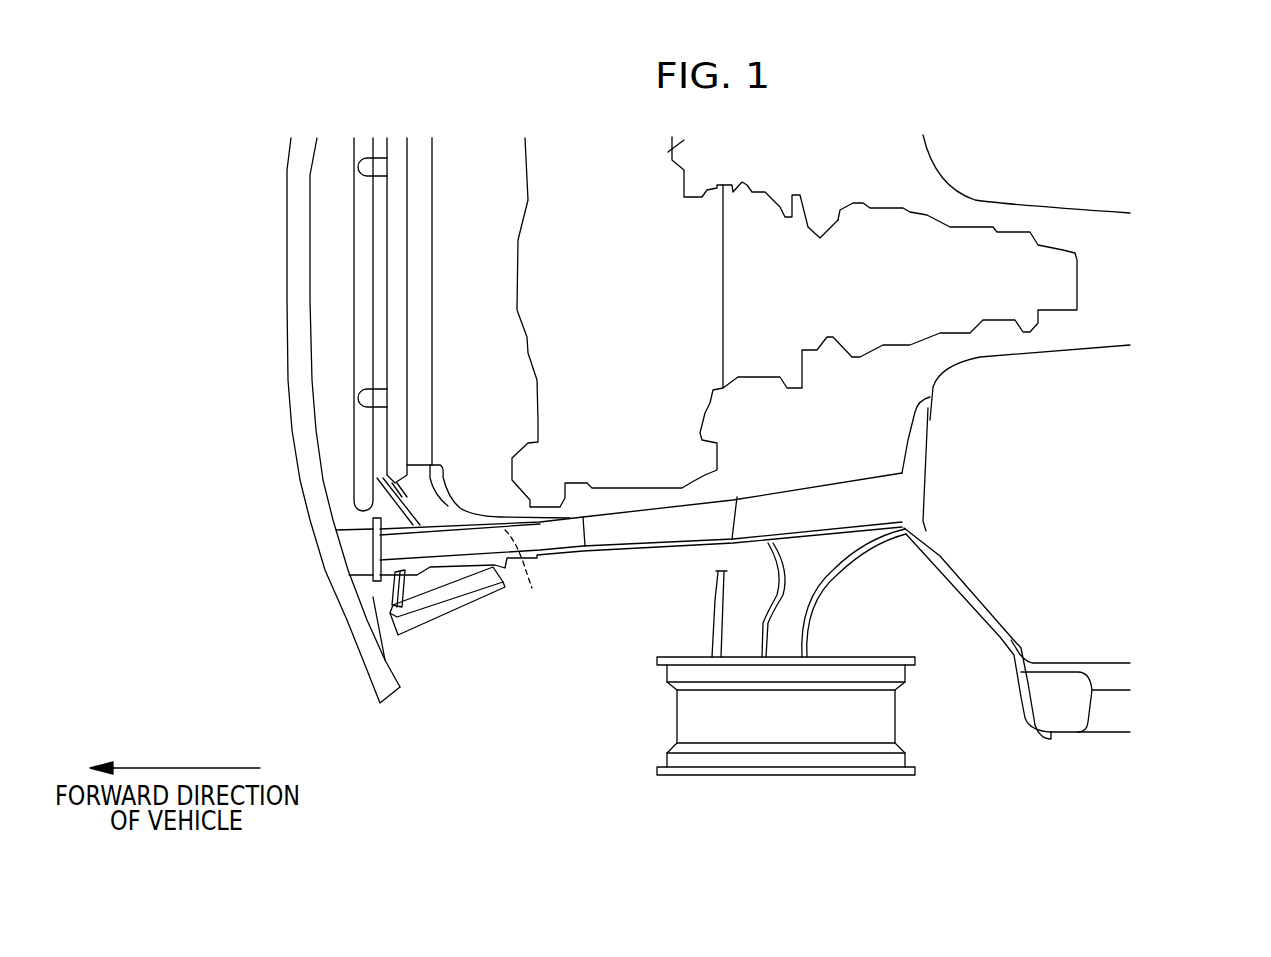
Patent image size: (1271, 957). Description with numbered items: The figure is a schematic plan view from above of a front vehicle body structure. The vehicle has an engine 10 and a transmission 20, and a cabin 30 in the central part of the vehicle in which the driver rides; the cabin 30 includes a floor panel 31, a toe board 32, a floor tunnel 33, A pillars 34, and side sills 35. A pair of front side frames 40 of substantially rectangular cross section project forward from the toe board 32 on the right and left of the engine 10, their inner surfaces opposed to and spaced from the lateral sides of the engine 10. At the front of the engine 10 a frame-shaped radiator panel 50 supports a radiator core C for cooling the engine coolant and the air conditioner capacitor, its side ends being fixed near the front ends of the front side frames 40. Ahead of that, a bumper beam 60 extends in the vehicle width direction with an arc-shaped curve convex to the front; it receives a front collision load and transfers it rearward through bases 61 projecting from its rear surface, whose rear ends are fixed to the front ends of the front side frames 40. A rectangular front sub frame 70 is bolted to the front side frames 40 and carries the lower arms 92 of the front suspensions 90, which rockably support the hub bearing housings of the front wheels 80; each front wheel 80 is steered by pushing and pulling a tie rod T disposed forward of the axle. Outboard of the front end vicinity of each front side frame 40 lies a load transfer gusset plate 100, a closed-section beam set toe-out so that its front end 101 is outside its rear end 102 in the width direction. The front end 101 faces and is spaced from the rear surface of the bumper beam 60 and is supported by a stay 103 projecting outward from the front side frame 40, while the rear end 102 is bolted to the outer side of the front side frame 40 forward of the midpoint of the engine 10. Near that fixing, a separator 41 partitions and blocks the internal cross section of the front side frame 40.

The engine 10 is at (682, 156).
The transmission 20 is at (880, 220).
The radiator core C is at (363, 258).
The radiator panel 50 is at (395, 310).
The bumper beam 60 is at (297, 380).
The front sub frame 70 is at (428, 503).
The base 61 is at (360, 553).
The front side frame 40 is at (576, 553).
The separator 41 is at (525, 575).
The load transfer gusset plate 100 is at (386, 657).
The front end 101 is at (397, 627).
The rear end 102 is at (505, 593).
The stay 103 is at (397, 596).
The front wheel 80 is at (768, 758).
The tie rod T is at (715, 623).
The front suspension 90 is at (852, 593).
The lower arm 92 is at (810, 600).
The cabin 30 is at (1064, 611).
The floor panel 31 is at (1065, 602).
The toe board 32 is at (970, 584).
The floor tunnel 33 is at (1063, 353).
The A pillar 34 is at (1067, 722).
The side sill 35 is at (1104, 735).